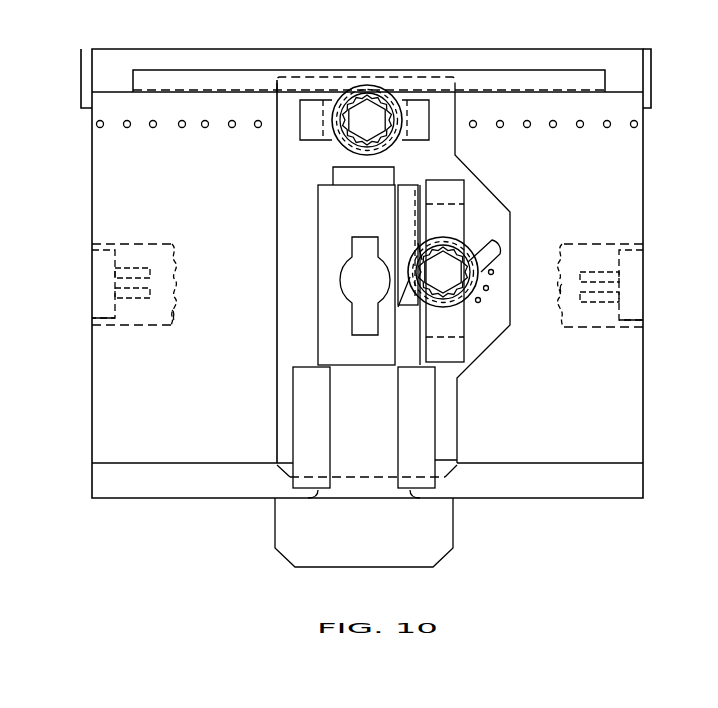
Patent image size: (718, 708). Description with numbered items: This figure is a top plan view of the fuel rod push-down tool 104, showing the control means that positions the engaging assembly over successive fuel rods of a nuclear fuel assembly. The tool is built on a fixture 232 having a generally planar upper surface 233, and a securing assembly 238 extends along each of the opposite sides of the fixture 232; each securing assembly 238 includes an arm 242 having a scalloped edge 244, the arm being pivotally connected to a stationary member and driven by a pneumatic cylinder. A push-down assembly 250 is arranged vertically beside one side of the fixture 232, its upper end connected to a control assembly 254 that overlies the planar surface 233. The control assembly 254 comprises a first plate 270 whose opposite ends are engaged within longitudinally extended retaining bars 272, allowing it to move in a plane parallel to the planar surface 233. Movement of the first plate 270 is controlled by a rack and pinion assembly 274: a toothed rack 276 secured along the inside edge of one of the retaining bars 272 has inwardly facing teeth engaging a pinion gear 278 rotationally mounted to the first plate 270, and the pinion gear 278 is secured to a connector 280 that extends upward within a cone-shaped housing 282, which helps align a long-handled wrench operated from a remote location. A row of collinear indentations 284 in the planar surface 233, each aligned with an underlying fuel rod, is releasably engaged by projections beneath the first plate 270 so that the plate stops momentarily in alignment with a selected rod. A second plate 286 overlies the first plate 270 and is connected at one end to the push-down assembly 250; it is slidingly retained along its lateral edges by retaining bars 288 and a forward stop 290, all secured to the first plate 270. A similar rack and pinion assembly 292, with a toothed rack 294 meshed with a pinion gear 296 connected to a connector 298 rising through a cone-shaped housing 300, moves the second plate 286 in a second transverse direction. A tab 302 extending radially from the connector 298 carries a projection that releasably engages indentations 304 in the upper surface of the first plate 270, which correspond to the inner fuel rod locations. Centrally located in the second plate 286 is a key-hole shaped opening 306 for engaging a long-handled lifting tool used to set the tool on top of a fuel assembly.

The fuel rod push-down tool 104 is at (644, 194).
The fixture 232 is at (622, 369).
The planar upper surface 233 is at (238, 278).
The securing assembly 238 is at (95, 278).
The arm 242 is at (131, 320).
The scalloped edge 244 is at (176, 315).
The push-down assembly 250 is at (455, 533).
The control assembly 254 is at (466, 193).
The first plate 270 is at (290, 183).
The retaining bars 272 is at (580, 62).
The rack and pinion assembly 274 is at (395, 93).
The toothed rack 276 is at (217, 77).
The pinion gear 278 is at (347, 97).
The connector 280 is at (368, 113).
The cone-shaped housing 282 is at (402, 119).
The indentations 284 is at (100, 128).
The second plate 286 is at (320, 226).
The retaining bars 288 is at (400, 203).
The forward stop 290 is at (385, 173).
The rack and pinion assembly 292 is at (401, 303).
The toothed rack 294 is at (416, 243).
The pinion gear 296 is at (438, 246).
The connector 298 is at (451, 282).
The cone-shaped housing 300 is at (434, 292).
The tab 302 is at (493, 248).
The indentations 304 is at (490, 286).
The key-hole shaped opening 306 is at (353, 292).